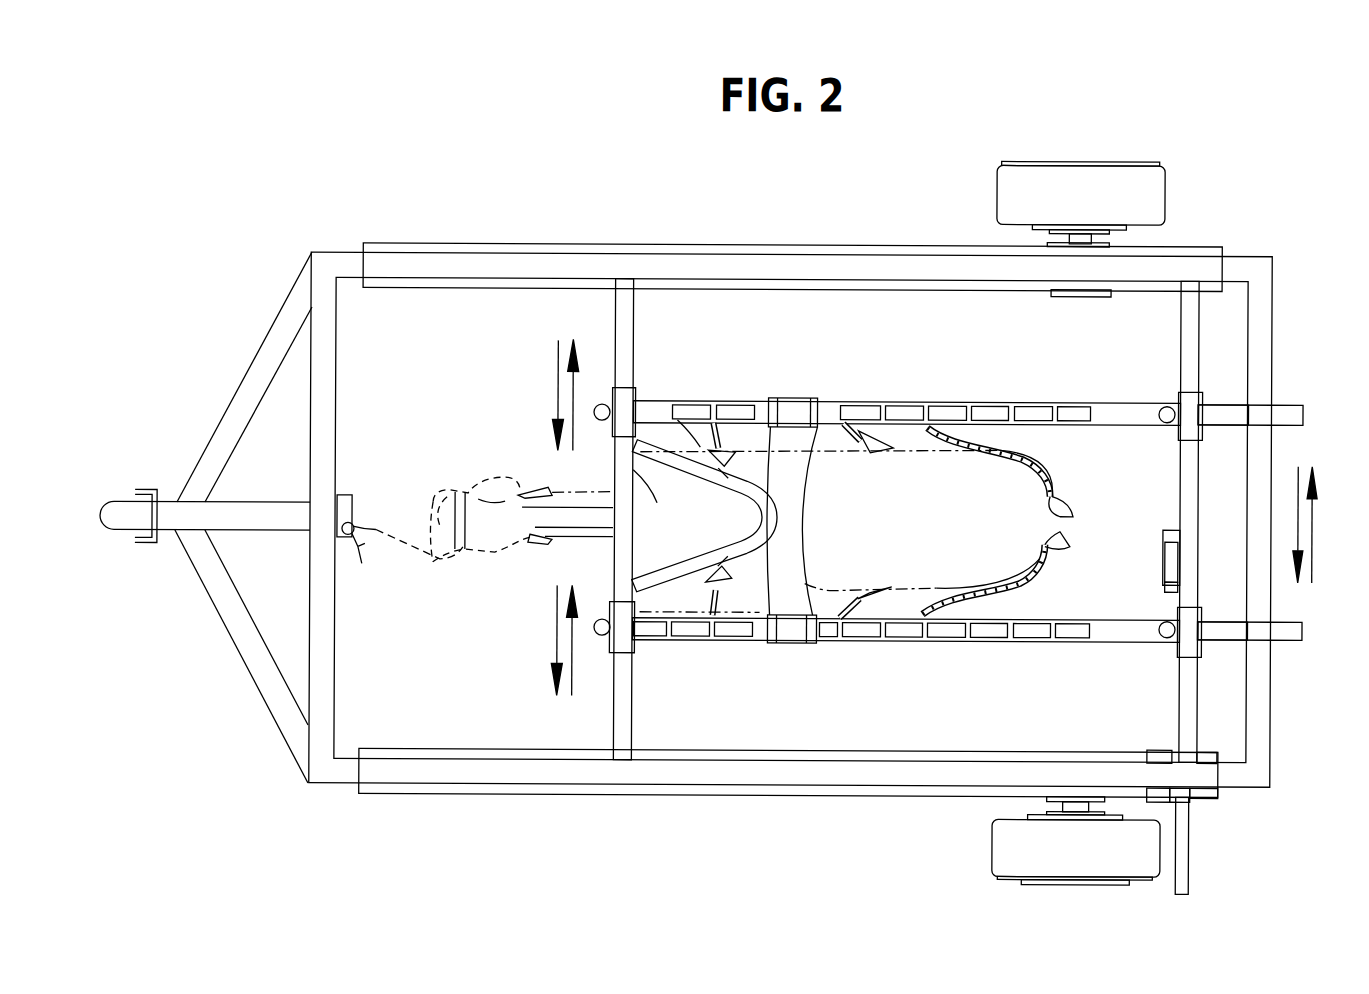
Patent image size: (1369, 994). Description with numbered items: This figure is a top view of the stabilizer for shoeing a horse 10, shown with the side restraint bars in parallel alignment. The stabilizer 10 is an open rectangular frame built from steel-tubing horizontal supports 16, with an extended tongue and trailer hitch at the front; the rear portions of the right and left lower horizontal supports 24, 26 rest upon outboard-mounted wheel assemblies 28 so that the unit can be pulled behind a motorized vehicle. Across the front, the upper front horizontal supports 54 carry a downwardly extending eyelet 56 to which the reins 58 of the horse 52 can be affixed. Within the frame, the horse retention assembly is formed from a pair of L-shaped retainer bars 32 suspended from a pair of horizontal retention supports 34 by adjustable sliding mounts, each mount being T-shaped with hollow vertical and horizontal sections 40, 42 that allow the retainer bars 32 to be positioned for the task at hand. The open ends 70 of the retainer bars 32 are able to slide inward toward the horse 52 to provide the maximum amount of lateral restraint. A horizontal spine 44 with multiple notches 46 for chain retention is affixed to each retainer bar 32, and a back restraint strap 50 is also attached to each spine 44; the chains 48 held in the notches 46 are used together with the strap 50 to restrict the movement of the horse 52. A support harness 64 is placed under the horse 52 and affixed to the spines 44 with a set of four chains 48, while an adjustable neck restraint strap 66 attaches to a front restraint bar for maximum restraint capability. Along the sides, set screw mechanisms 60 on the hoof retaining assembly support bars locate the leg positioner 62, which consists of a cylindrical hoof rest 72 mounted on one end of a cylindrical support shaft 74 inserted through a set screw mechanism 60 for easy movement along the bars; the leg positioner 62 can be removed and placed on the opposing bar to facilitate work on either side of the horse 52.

The stabilizer for shoeing a horse 10 is at (505, 122).
The horizontal supports 16 is at (434, 268).
The right lower horizontal support 24 is at (641, 795).
The left lower horizontal support 26 is at (669, 268).
The wheel assemblies 28 is at (1010, 194).
The retainer bars 32 is at (1227, 422).
The horizontal retention supports 34 is at (611, 312).
The vertical section 40 is at (793, 532).
The horizontal section 42 is at (1201, 400).
The horizontal spine 44 is at (1066, 401).
The notches 46 is at (1008, 402).
The chains 48 is at (970, 596).
The back restraint strap 50 is at (750, 437).
The horse 52 is at (920, 455).
The upper front horizontal supports 54 is at (336, 369).
The eyelet 56 is at (352, 498).
The reins 58 is at (416, 558).
The set screw mechanisms 60 is at (1151, 750).
The leg positioner 62 is at (1163, 541).
The support harness 64 is at (813, 644).
The neck restraint strap 66 is at (697, 440).
The open ends 70 is at (1302, 410).
The cylindrical hoof rest 72 is at (1165, 533).
The cylindrical support shaft 74 is at (1173, 593).